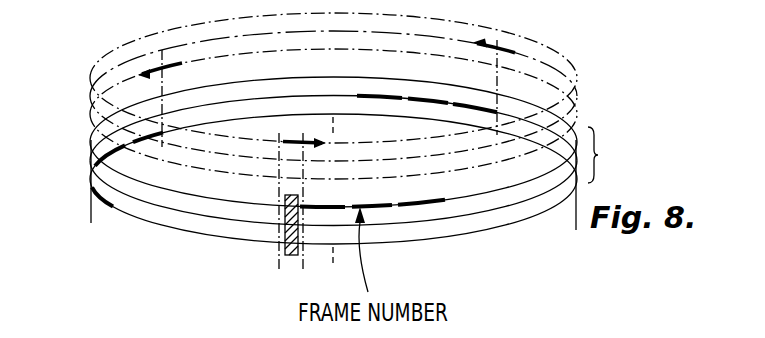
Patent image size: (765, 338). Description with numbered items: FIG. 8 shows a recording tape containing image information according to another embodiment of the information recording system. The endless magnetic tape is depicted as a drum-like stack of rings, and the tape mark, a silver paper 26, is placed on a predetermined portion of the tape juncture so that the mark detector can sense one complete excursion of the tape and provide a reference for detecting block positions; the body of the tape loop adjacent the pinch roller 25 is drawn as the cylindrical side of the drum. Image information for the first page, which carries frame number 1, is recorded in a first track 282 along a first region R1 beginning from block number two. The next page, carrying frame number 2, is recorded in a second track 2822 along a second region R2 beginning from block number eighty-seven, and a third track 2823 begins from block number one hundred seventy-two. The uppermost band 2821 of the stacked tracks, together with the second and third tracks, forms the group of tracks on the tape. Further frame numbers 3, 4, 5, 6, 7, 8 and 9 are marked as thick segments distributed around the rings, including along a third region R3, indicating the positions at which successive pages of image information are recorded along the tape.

The pinch roller 25 is at (89, 211).
The silver paper 26 is at (286, 258).
The first track 282 is at (610, 155).
The first track 2821 is at (498, 190).
The second track 2822 is at (452, 217).
The third track 2823 is at (388, 242).
The first region R1 is at (333, 83).
The second region R2 is at (333, 87).
The ring R3 is at (333, 116).
The frame number 1 is at (322, 196).
The frame number 2 is at (475, 99).
The frame 3 is at (148, 145).
The frame 4 is at (372, 196).
The frame 5 is at (428, 91).
The frame 6 is at (110, 158).
The frame 7 is at (421, 193).
The frame 8 is at (379, 88).
The frame 9 is at (102, 205).